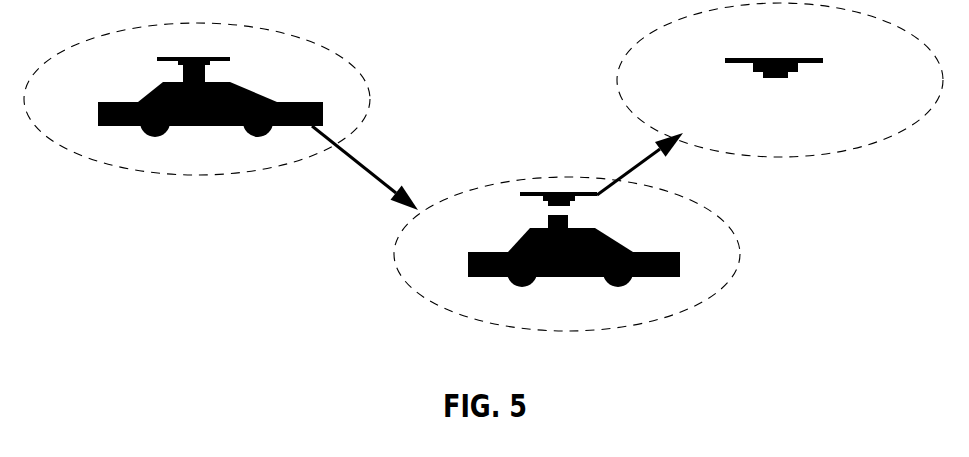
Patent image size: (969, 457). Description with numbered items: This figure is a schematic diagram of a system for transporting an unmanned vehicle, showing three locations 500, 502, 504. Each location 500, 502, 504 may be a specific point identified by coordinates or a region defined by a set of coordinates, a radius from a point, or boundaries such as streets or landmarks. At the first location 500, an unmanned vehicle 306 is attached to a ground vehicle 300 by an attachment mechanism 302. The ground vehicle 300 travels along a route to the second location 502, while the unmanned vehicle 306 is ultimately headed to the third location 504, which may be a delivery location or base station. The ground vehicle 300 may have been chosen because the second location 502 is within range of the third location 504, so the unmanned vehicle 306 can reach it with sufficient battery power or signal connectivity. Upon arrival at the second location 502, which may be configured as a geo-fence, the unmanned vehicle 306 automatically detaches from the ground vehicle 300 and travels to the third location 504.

The ground vehicle 300 is at (112, 126).
The attachment mechanism 302 is at (181, 78).
The unmanned vehicle 306 is at (222, 54).
The first location 500 is at (195, 173).
The second location 502 is at (605, 326).
The third location 504 is at (800, 155).